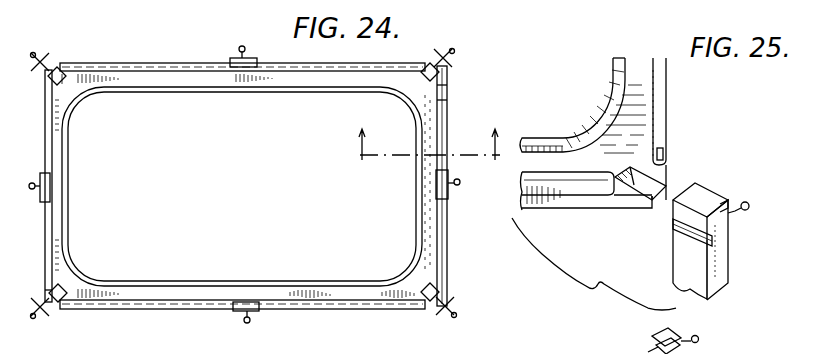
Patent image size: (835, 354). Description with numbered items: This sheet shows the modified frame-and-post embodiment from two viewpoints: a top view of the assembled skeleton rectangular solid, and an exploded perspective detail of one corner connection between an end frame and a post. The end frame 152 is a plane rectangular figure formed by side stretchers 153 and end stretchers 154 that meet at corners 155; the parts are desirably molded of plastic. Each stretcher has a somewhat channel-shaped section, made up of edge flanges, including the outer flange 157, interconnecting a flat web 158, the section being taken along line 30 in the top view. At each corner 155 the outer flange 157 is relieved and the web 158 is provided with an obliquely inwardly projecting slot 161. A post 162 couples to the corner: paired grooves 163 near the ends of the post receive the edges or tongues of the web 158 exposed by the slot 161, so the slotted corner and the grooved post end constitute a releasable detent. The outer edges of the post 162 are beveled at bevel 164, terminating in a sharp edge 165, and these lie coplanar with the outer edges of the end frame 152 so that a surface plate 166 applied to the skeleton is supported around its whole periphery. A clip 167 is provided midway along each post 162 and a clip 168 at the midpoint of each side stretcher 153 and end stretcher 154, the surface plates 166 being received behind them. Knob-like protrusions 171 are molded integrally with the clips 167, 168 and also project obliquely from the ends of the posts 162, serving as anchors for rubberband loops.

In FIG. 24, the section line 30 is at (416, 138).
In FIG. 24, the end frame 152 is at (339, 309).
In FIG. 24, the side stretcher 153 is at (165, 68).
In FIG. 24, the end stretcher 154 is at (45, 216).
In FIG. 25, the end stretcher 154 is at (666, 86).
In FIG. 24, the corner 155 is at (78, 300).
In FIG. 25, the corner 155 is at (637, 146).
In FIG. 24, the outer flange 157 is at (446, 86).
In FIG. 25, the outer flange 157 is at (660, 114).
In FIG. 25, the web 158 is at (657, 173).
In FIG. 25, the slot 161 is at (658, 204).
In FIG. 24, the post 162 is at (55, 66).
In FIG. 25, the post 162 is at (678, 259).
In FIG. 25, the groove 163 is at (714, 236).
In FIG. 24, the bevel 164 is at (43, 303).
In FIG. 25, the bevel 164 is at (718, 283).
In FIG. 25, the sharp edge 165 is at (726, 264).
In FIG. 24, the surface plate 166 is at (447, 233).
In FIG. 24, the clip 167 is at (456, 300).
In FIG. 24, the clip 168 is at (232, 60).
In FIG. 24, the knob-like protrusion 171 is at (249, 320).
In FIG. 25, the knob-like protrusion 171 is at (736, 201).